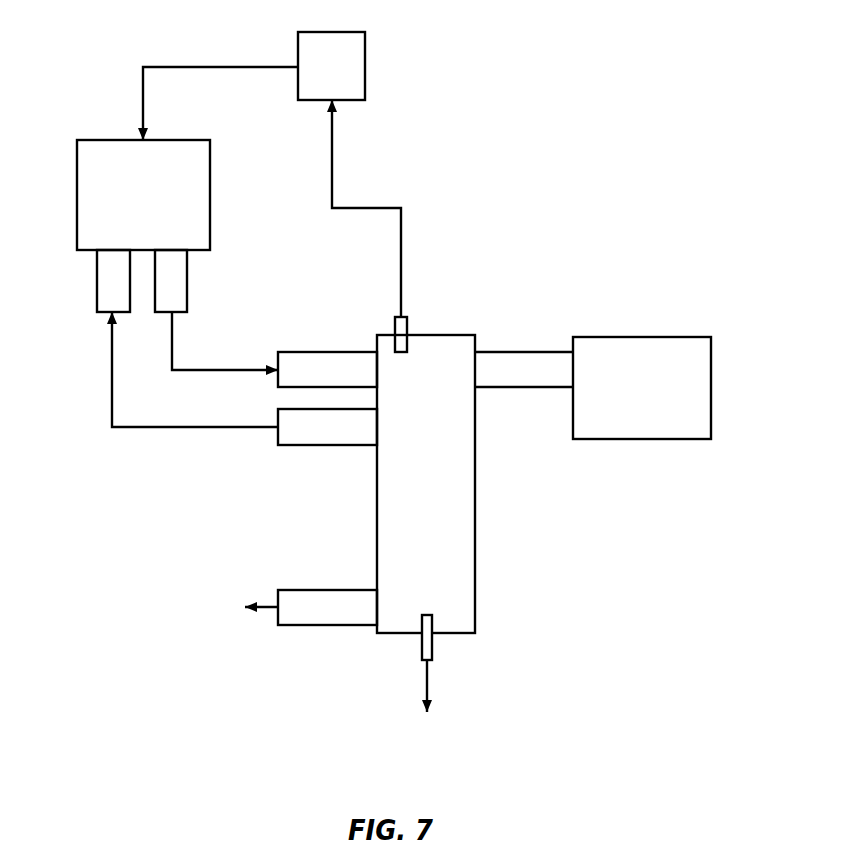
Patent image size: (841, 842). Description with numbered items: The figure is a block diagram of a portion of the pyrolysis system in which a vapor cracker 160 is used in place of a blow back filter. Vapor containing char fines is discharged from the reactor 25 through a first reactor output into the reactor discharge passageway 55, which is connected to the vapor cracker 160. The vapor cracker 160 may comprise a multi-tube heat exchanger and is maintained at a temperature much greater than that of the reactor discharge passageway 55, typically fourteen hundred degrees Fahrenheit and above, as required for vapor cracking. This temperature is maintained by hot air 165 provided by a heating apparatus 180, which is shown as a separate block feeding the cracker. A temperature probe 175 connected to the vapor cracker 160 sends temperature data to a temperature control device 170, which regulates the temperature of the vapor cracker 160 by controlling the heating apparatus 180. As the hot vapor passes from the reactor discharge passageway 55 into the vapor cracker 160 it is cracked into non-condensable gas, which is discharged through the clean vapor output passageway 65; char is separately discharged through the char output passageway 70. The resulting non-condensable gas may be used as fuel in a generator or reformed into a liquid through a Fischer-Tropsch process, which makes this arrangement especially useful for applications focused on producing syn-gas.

The heating apparatus 180 is at (120, 140).
The temperature control device 170 is at (367, 83).
The temperature probe 175 is at (407, 330).
The vapor cracker 160 is at (477, 492).
The hot air 165 is at (172, 355).
The reactor discharge passageway 55 is at (493, 388).
The reactor 25 is at (650, 337).
The clean vapor output passageway 65 is at (343, 627).
The char output passageway 70 is at (432, 645).